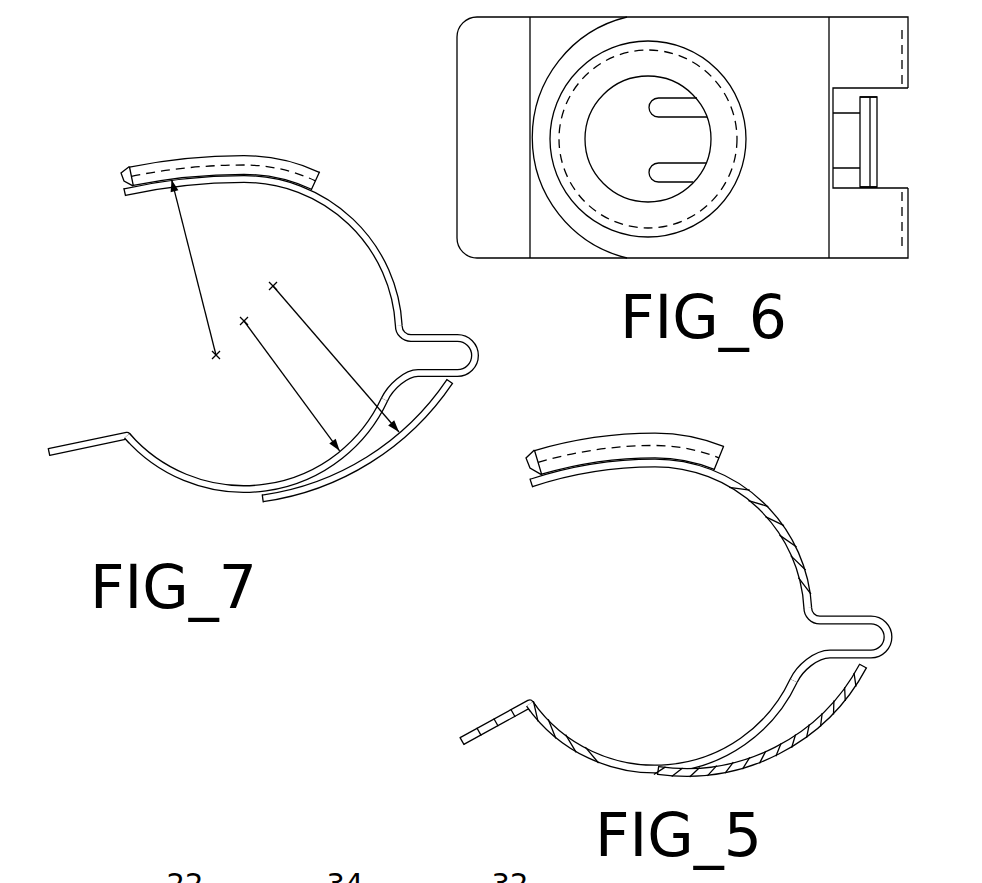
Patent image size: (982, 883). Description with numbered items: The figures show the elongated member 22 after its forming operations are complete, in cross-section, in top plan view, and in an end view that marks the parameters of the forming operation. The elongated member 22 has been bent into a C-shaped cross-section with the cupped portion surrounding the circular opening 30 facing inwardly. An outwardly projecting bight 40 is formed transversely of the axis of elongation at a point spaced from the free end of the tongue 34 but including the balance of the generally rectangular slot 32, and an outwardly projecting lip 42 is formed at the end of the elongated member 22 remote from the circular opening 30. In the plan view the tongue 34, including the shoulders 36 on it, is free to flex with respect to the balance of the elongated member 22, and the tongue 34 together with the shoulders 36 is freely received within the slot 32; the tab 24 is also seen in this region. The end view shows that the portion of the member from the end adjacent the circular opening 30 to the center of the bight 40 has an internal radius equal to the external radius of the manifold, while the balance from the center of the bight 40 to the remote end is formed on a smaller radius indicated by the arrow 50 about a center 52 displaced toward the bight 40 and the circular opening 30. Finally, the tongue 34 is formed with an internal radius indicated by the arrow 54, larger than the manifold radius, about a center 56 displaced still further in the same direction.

In FIG. 6, the elongated member 22 is at (780, 243).
In FIG. 7, the elongated member 22 is at (399, 303).
In FIG. 5, the elongated member 22 is at (774, 518).
In FIG. 6, the tab 24 is at (848, 138).
In FIG. 6, the circular opening 30 is at (601, 149).
In FIG. 7, the circular opening 30 is at (239, 153).
In FIG. 5, the circular opening 30 is at (636, 432).
In FIG. 6, the generally rectangular slot 32 is at (831, 187).
In FIG. 7, the tongue 34 is at (370, 464).
In FIG. 5, the tongue 34 is at (809, 732).
In FIG. 6, the shoulders 36 is at (877, 182).
In FIG. 7, the outwardly projecting bight 40 is at (468, 334).
In FIG. 5, the outwardly projecting bight 40 is at (865, 615).
In FIG. 6, the outwardly projecting lip 42 is at (470, 70).
In FIG. 7, the outwardly projecting lip 42 is at (76, 435).
In FIG. 5, the outwardly projecting lip 42 is at (494, 716).
In FIG. 7, the arrow indicating smaller radius 50 is at (283, 377).
In FIG. 7, the center 52 is at (244, 315).
In FIG. 7, the arrow indicating tongue internal radius 54 is at (321, 341).
In FIG. 7, the center 56 is at (273, 281).